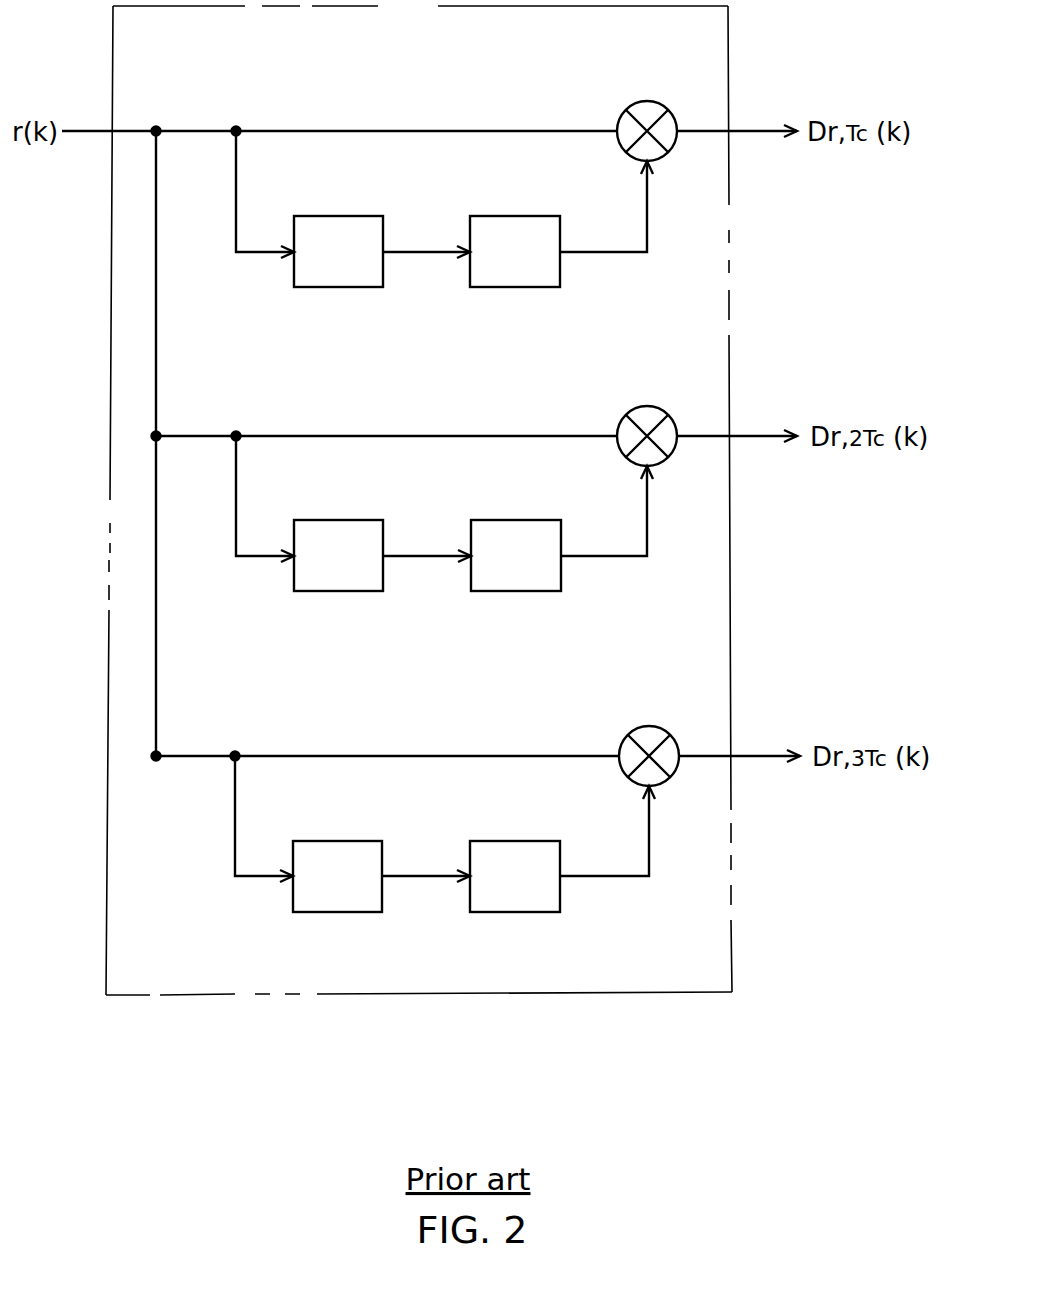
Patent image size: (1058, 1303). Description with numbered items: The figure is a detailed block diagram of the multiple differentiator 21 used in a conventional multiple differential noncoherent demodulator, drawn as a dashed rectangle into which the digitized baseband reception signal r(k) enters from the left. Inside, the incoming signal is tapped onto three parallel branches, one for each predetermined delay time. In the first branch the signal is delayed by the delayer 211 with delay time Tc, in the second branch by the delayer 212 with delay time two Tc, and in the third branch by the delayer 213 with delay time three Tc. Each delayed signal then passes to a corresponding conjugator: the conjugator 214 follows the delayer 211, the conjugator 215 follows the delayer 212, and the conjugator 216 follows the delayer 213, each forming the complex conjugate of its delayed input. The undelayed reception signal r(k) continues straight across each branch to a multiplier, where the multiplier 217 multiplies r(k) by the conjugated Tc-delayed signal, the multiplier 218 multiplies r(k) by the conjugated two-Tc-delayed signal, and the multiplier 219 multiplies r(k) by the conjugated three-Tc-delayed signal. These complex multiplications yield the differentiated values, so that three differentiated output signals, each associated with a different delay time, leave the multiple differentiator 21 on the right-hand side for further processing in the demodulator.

The multiple differentiator 21 is at (475, 995).
The delayer 211 is at (337, 287).
The delayer 212 is at (337, 591).
The delayer 213 is at (336, 912).
The conjugator 214 is at (517, 287).
The conjugator 215 is at (518, 591).
The conjugator 216 is at (517, 912).
The multiplier 217 is at (656, 100).
The multiplier 218 is at (656, 405).
The multiplier 219 is at (658, 725).